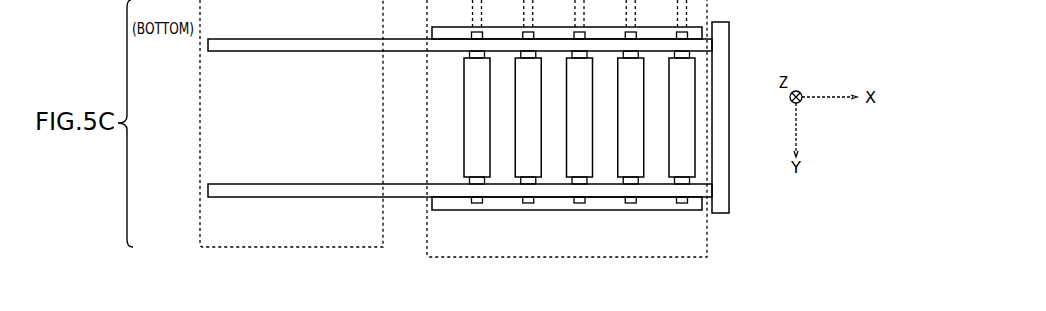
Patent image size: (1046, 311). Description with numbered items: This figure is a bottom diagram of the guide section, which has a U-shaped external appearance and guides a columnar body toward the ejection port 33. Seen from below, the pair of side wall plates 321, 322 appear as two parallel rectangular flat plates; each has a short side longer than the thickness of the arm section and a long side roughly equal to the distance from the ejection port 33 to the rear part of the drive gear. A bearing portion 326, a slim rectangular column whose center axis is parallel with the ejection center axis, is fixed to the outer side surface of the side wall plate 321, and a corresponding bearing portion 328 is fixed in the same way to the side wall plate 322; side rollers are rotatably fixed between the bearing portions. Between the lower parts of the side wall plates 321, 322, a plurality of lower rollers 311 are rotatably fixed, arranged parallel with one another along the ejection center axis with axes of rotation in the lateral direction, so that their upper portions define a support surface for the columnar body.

The side wall plate 321 is at (243, 39).
The side wall plate 322 is at (245, 198).
The bearing portion 326 is at (457, 27).
The bearing portion 328 is at (478, 210).
The lower roller 311 is at (464, 120).
The ejection port 33 is at (732, 84).